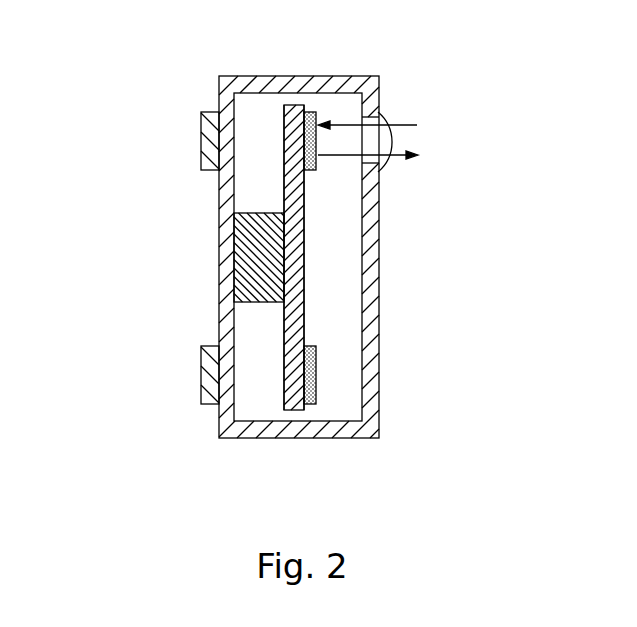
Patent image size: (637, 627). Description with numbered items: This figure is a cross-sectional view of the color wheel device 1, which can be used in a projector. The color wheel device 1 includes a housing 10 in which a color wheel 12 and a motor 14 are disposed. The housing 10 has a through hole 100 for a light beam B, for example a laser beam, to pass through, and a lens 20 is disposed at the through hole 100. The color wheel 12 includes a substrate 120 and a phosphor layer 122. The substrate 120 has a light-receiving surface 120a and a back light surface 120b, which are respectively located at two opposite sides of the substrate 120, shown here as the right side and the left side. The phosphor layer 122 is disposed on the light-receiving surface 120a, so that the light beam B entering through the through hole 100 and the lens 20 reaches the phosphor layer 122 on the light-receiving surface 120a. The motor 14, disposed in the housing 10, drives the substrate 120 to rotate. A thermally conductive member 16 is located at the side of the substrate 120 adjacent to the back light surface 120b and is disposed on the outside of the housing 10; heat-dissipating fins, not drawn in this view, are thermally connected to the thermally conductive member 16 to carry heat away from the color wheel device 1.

The color wheel device 1 is at (101, 39).
The housing 10 is at (257, 86).
The through hole 100 is at (381, 174).
The color wheel 12 is at (348, 300).
The substrate 120 is at (298, 318).
The light-receiving surface 120a is at (304, 408).
The back light surface 120b is at (284, 395).
The phosphor layer 122 is at (316, 358).
The motor 14 is at (240, 259).
The thermally conductive member 16 is at (209, 142).
The lens 20 is at (388, 113).
The light beam B is at (417, 125).